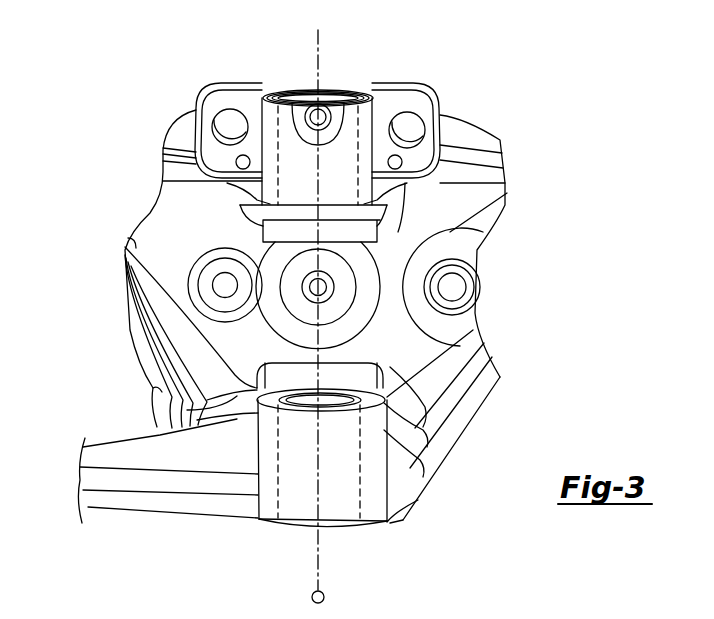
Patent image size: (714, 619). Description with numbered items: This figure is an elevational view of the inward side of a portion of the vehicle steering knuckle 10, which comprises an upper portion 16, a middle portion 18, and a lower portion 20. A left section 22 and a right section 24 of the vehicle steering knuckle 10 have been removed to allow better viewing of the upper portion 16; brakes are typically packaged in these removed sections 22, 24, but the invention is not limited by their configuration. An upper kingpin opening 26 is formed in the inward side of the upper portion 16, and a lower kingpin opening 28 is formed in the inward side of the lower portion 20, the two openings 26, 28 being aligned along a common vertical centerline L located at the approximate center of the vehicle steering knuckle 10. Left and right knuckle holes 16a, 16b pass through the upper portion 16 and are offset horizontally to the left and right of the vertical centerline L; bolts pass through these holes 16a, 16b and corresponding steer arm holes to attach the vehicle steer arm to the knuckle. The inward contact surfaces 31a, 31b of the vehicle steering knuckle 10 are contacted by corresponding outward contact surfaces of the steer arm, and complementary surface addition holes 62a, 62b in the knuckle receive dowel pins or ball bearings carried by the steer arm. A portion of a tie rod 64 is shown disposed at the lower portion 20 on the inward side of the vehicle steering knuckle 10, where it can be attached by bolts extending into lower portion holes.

The vehicle steering knuckle 10 is at (467, 52).
The upper portion 16 is at (293, 102).
The left knuckle hole 16a is at (225, 129).
The right knuckle hole 16b is at (411, 131).
The middle portion 18 is at (128, 236).
The lower portion 20 is at (395, 467).
The left section 22 is at (116, 209).
The right section 24 is at (530, 205).
The upper kingpin opening 26 is at (323, 88).
The lower kingpin opening 28 is at (336, 527).
The inward contact surface 31a is at (232, 107).
The inward contact surface 31b is at (390, 107).
The surface addition hole 62a is at (243, 169).
The surface addition hole 62b is at (395, 169).
The tie rod 64 is at (142, 500).
The vertical centerline L is at (326, 598).